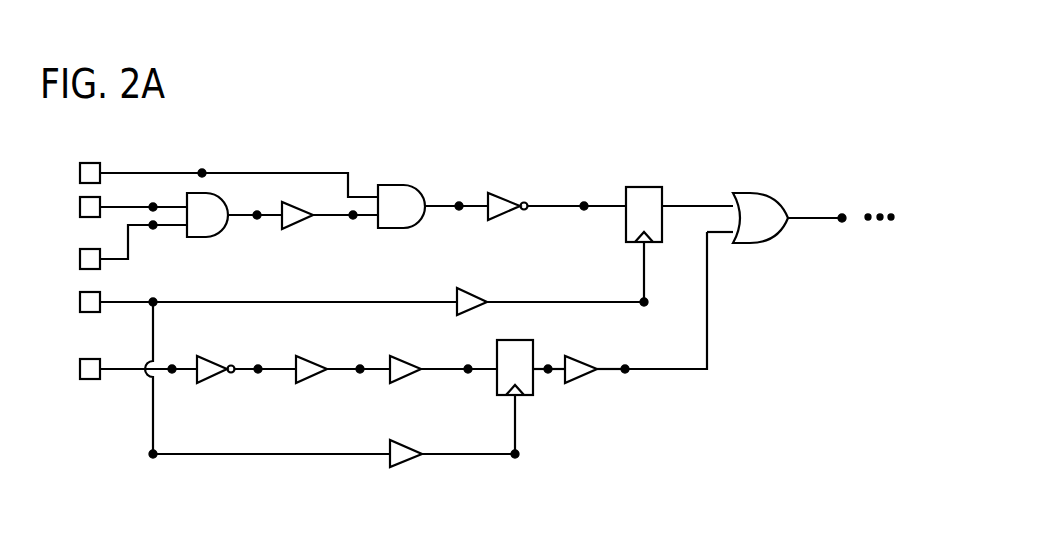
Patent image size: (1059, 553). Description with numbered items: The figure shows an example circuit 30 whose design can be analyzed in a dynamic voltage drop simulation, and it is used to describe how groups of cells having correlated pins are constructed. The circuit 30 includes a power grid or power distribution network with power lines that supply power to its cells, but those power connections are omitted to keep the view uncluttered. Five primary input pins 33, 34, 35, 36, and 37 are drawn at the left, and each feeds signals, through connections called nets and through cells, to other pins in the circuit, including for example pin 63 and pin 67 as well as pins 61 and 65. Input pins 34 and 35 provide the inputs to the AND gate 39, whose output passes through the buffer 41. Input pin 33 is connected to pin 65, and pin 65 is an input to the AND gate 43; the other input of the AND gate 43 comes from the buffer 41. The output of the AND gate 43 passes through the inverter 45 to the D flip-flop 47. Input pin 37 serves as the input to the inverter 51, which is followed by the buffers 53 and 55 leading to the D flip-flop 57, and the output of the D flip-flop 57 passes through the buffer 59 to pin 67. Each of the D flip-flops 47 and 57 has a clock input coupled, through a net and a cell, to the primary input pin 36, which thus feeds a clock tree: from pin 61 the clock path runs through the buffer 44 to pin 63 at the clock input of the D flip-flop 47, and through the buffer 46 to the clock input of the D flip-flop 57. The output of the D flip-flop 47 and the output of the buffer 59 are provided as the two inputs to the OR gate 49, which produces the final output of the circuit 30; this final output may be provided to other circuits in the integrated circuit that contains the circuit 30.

The circuit 30 is at (718, 55).
The input pin 33 is at (78, 172).
The input pin 34 is at (78, 206).
The input pin 35 is at (78, 258).
The input pin 36 is at (78, 301).
The input pin 37 is at (78, 368).
The AND gate 39 is at (205, 237).
The buffer 41 is at (297, 229).
The AND gate 43 is at (410, 228).
The buffer 44 is at (470, 290).
The inverter 45 is at (505, 220).
The buffer 46 is at (405, 440).
The D flip-flop 47 is at (645, 187).
The OR gate 49 is at (760, 193).
The inverter 51 is at (205, 383).
The buffer 53 is at (303, 383).
The buffer 55 is at (405, 357).
The D flip-flop 57 is at (533, 390).
The buffer 59 is at (580, 357).
The pin 61 is at (156, 305).
The pin 63 is at (645, 306).
The pin 65 is at (203, 171).
The pin 67 is at (627, 372).